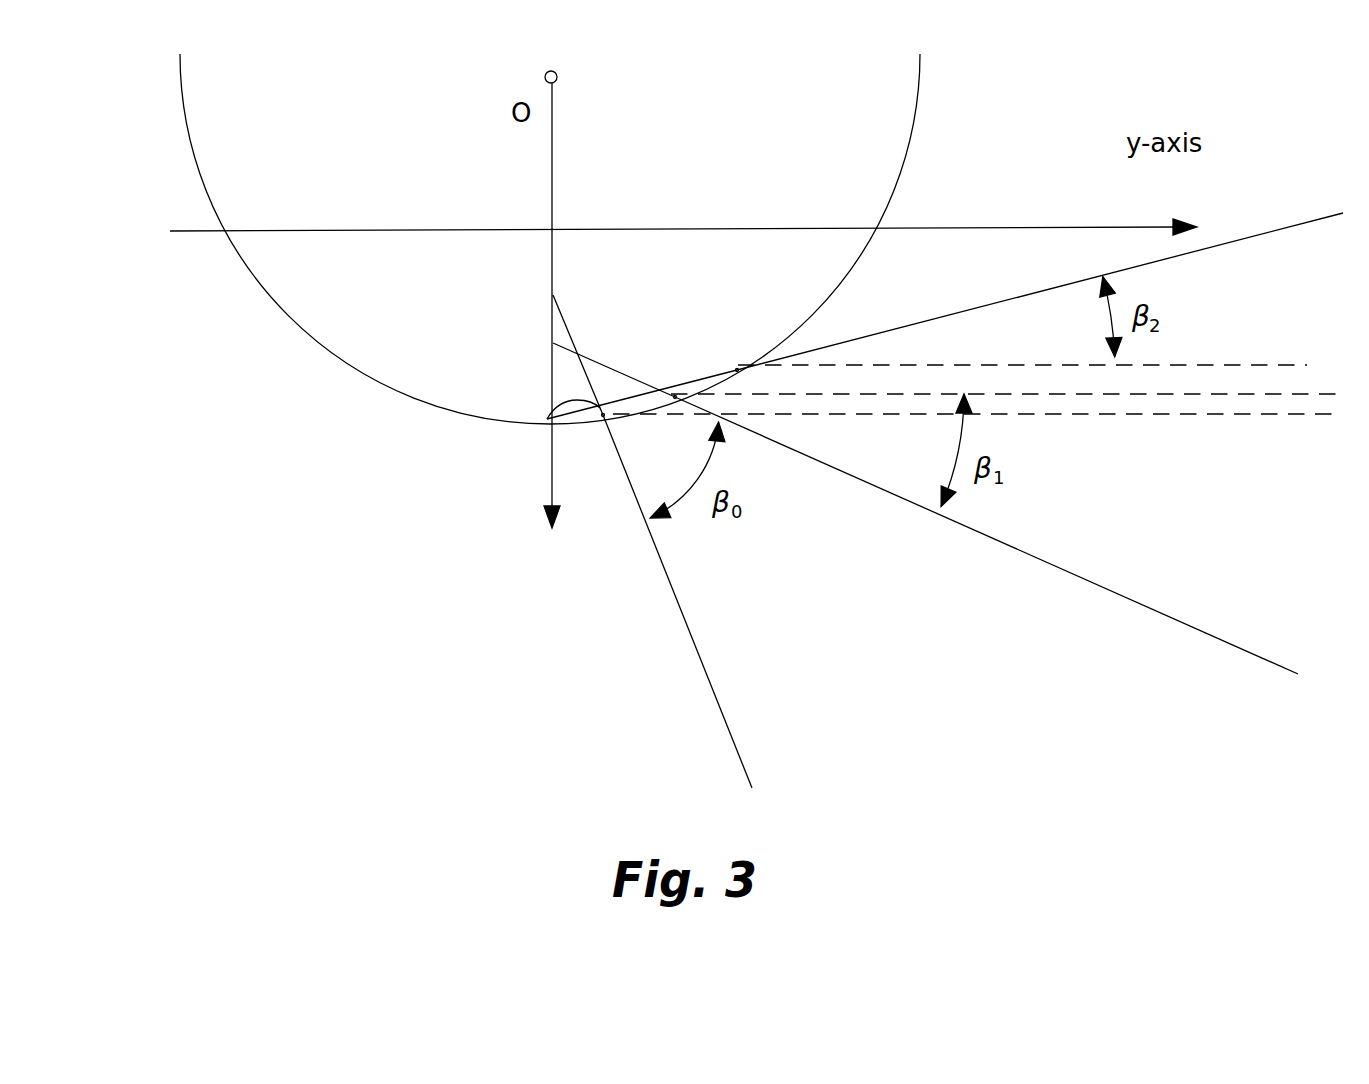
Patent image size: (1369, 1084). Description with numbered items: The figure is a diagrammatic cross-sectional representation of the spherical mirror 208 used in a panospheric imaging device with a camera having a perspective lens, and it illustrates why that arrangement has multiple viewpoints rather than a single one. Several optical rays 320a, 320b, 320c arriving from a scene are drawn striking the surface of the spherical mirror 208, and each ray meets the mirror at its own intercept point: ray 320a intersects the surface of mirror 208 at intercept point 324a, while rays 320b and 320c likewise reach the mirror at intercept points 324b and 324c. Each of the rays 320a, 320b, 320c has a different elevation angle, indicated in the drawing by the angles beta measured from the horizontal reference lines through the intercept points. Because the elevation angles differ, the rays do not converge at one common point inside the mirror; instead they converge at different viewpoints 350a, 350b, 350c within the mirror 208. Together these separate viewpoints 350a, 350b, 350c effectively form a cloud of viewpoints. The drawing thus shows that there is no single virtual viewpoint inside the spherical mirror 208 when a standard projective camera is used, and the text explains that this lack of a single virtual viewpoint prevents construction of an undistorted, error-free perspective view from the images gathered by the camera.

The spherical mirror 208 is at (250, 267).
The optical ray 320a is at (717, 696).
The optical ray 320b is at (1067, 569).
The optical ray 320c is at (1232, 242).
The intercept point 324a is at (600, 406).
The intercept point 324b is at (675, 395).
The intercept point 324c is at (737, 368).
The viewpoint 350a is at (547, 417).
The viewpoint 350b is at (578, 350).
The viewpoint 350c is at (663, 387).